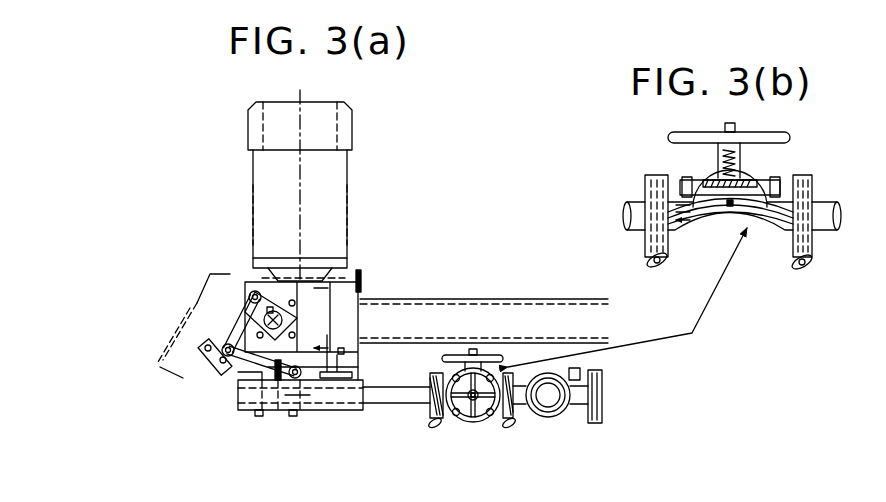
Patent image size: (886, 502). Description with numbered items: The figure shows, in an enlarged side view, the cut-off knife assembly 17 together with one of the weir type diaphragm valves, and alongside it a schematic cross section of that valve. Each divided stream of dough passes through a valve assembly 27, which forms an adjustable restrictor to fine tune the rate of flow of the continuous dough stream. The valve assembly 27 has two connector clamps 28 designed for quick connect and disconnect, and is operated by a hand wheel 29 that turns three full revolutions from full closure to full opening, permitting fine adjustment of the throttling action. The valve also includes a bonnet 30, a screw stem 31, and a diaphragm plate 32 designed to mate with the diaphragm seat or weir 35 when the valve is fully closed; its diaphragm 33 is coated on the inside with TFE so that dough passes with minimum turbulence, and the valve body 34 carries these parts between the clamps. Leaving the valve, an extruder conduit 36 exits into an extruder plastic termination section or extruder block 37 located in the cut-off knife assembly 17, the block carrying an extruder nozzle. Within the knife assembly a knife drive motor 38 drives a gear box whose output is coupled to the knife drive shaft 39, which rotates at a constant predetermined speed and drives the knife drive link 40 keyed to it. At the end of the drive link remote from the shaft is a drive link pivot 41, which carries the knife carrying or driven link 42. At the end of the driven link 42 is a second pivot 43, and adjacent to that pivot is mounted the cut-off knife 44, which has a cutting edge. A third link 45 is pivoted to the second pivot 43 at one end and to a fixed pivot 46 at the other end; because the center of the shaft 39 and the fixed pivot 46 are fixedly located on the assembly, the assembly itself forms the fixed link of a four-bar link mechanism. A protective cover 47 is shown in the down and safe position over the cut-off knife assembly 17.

In FIG. 3A, the cut-off knife assembly 17 is at (360, 258).
In FIG. 3A, the valve assembly 27 is at (483, 425).
In FIG. 3B, the valve assembly 27 is at (797, 133).
In FIG. 3B, the connector clamps 28 is at (645, 178).
In FIG. 3B, the hand wheel 29 is at (668, 137).
In FIG. 3B, the bonnet 30 is at (748, 176).
In FIG. 3B, the screw stem 31 is at (718, 157).
In FIG. 3B, the diaphragm plate 32 is at (763, 207).
In FIG. 3B, the diaphragm 33 is at (780, 190).
In FIG. 3B, the valve body 34 is at (683, 232).
In FIG. 3B, the diaphragm seat or weir 35 is at (729, 208).
In FIG. 3A, the extruder conduit 36 is at (412, 407).
In FIG. 3A, the extruder block 37 is at (287, 412).
In FIG. 3A, the knife drive motor 38 is at (335, 175).
In FIG. 3A, the knife drive shaft 39 is at (287, 320).
In FIG. 3A, the knife drive link 40 is at (270, 283).
In FIG. 3A, the drive link pivot 41 is at (250, 294).
In FIG. 3A, the driven link 42 is at (230, 322).
In FIG. 3A, the second pivot 43 is at (207, 367).
In FIG. 3A, the cut-off knife 44 is at (223, 378).
In FIG. 3A, the third link 45 is at (277, 380).
In FIG. 3A, the fixed pivot 46 is at (300, 368).
In FIG. 3A, the protective cover 47 is at (162, 363).